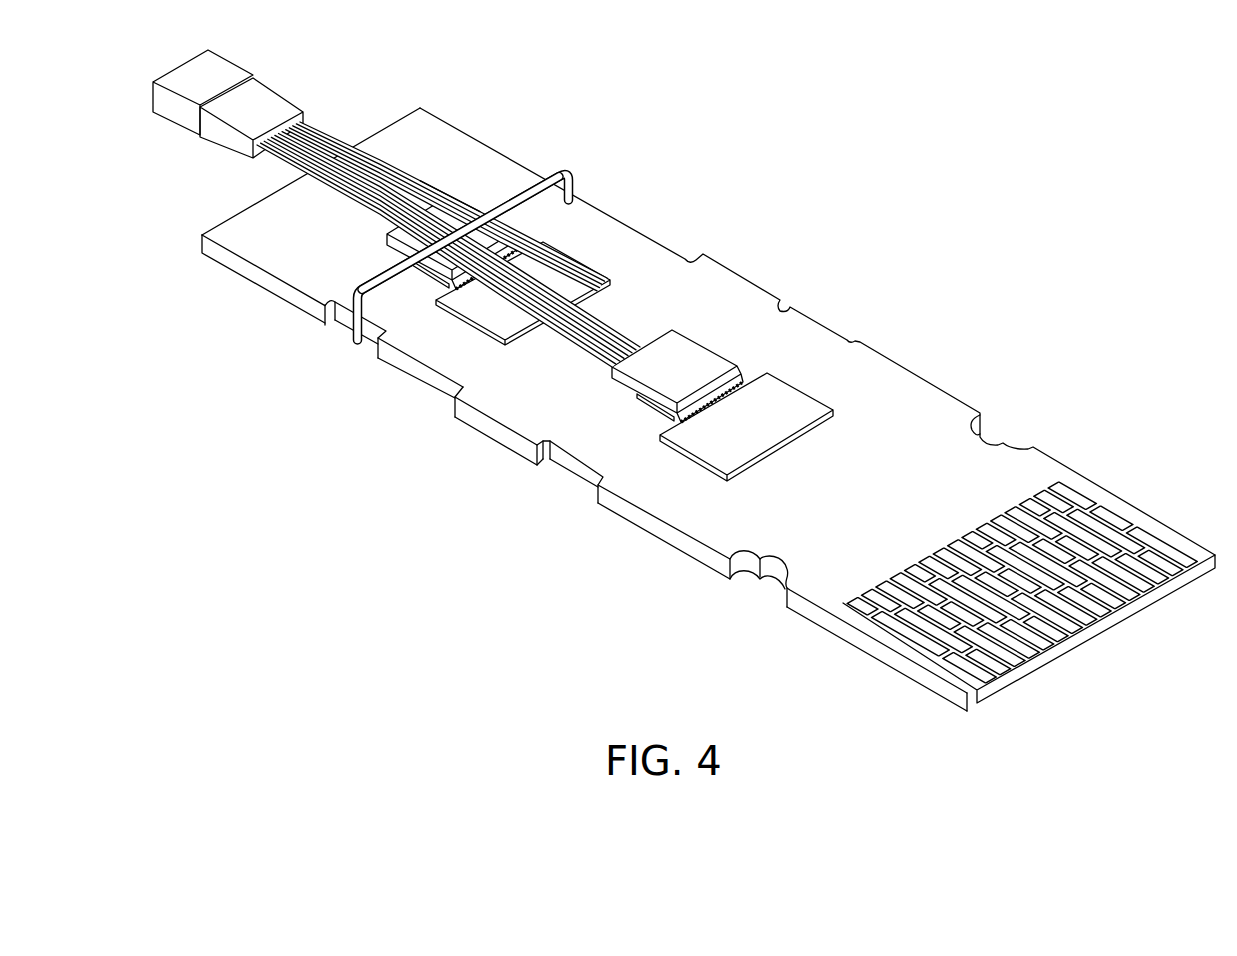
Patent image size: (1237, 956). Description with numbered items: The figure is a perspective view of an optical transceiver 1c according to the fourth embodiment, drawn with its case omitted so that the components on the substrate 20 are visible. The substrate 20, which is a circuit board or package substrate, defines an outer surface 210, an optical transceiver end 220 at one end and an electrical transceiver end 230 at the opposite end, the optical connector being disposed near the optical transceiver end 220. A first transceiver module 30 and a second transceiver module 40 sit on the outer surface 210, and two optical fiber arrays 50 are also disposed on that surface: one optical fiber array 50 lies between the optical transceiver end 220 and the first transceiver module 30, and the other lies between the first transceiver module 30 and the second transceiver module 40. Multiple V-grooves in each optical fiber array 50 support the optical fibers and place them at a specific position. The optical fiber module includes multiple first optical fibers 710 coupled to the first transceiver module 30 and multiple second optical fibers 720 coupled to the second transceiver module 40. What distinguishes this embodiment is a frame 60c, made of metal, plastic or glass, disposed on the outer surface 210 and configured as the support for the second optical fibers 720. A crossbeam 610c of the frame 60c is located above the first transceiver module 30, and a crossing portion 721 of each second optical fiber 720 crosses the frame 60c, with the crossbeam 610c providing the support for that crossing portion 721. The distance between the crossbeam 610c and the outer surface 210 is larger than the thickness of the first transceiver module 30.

The optical transceiver 1c is at (922, 120).
The substrate 20 is at (956, 385).
The outer surface 210 is at (880, 382).
The optical transceiver end 220 is at (222, 217).
The electrical transceiver end 230 is at (1164, 550).
The first transceiver module 30 is at (569, 265).
The second transceiver module 40 is at (775, 413).
The optical fiber array 50 is at (683, 362).
The frame 60c is at (568, 170).
The crossbeam 610c is at (513, 197).
The first optical fibers 710 is at (356, 205).
The second optical fibers 720 is at (392, 167).
The crossing portion 721 is at (457, 190).